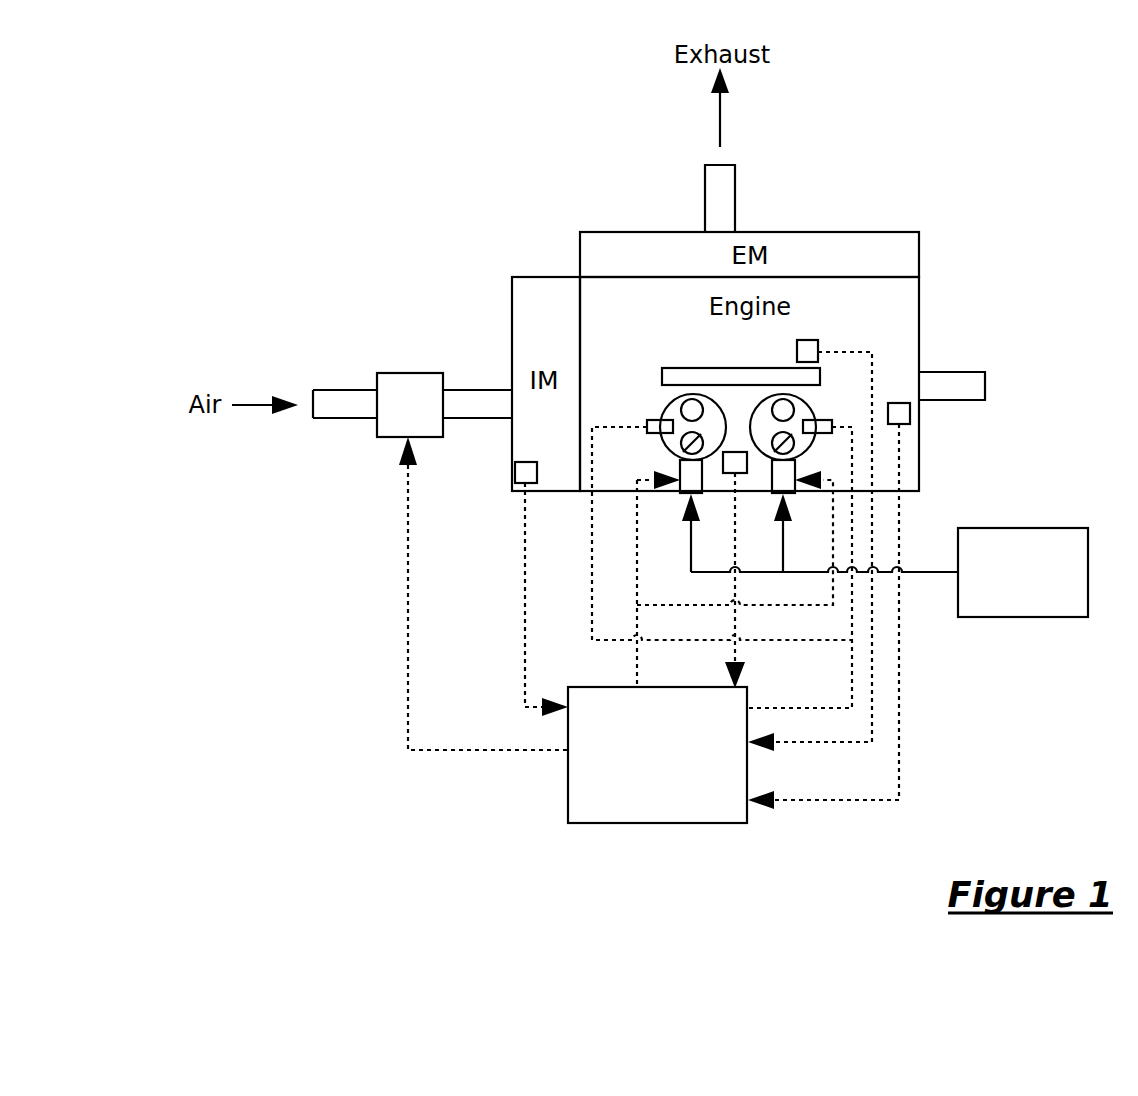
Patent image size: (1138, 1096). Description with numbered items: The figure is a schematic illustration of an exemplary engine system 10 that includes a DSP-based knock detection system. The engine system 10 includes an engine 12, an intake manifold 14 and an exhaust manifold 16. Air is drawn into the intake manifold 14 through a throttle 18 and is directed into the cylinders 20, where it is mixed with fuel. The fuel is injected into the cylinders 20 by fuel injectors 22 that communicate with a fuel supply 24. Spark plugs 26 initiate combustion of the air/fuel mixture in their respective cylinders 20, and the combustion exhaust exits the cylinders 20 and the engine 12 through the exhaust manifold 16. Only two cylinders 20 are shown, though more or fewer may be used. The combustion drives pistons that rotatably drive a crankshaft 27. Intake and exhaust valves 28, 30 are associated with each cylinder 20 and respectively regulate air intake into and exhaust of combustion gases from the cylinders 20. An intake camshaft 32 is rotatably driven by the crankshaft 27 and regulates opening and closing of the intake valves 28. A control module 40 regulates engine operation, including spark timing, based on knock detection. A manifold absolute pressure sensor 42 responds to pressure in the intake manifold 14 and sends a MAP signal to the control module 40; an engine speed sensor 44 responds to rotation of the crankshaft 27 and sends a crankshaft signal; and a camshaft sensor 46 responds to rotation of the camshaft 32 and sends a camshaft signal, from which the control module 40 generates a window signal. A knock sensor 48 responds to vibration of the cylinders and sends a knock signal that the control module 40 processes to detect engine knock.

The engine system 10 is at (478, 168).
The engine 12 is at (923, 310).
The intake manifold 14 is at (547, 277).
The exhaust manifold 16 is at (908, 232).
The throttle 18 is at (413, 372).
The cylinders 20 is at (667, 403).
The fuel injectors 22 is at (682, 497).
The fuel supply 24 is at (1058, 617).
The spark plugs 26 is at (830, 422).
The crankshaft 27 is at (983, 370).
The intake valves 28 is at (688, 398).
The exhaust valves 30 is at (778, 442).
The intake camshaft 32 is at (690, 368).
The control module 40 is at (683, 823).
The manifold absolute pressure sensor 42 is at (513, 492).
The engine speed sensor 44 is at (907, 425).
The camshaft sensor 46 is at (810, 340).
The knock sensor 48 is at (737, 452).